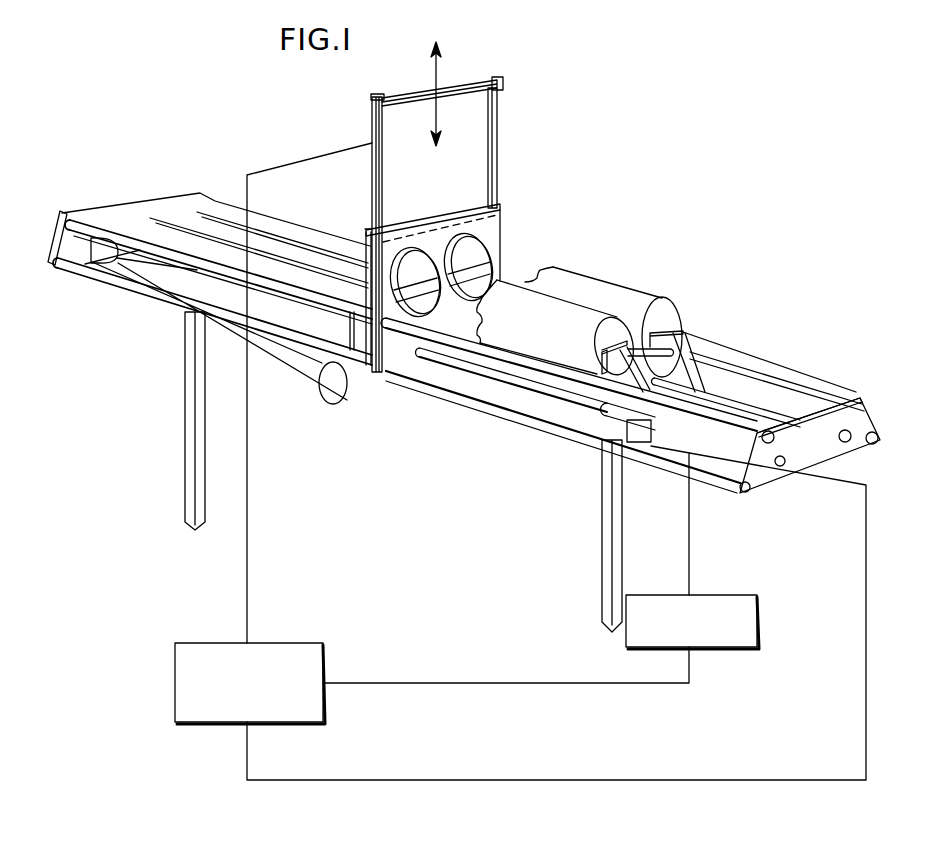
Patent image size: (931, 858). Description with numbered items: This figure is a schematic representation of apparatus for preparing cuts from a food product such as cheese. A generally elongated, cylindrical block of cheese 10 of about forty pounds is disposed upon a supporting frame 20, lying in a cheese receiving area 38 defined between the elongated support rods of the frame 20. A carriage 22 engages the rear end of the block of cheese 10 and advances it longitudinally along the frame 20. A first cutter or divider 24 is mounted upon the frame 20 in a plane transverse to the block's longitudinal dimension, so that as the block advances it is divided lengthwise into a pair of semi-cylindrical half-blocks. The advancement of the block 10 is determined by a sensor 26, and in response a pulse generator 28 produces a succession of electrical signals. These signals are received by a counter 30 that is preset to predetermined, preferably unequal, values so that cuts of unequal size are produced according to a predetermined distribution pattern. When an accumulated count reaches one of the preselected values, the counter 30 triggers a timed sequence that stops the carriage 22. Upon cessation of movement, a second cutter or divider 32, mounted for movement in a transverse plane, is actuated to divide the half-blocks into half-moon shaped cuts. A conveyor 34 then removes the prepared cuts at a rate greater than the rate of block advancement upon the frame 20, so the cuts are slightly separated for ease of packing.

The block of cheese 10 is at (629, 297).
The supporting frame 20 is at (815, 393).
The carriage 22 is at (698, 356).
The first cutter 24 is at (447, 248).
The sensor 26 is at (619, 434).
The pulse generator 28 is at (757, 598).
The counter 30 is at (320, 645).
The second cutter 32 is at (434, 224).
The conveyor 34 is at (196, 214).
The cheese receiving area 38 is at (682, 286).